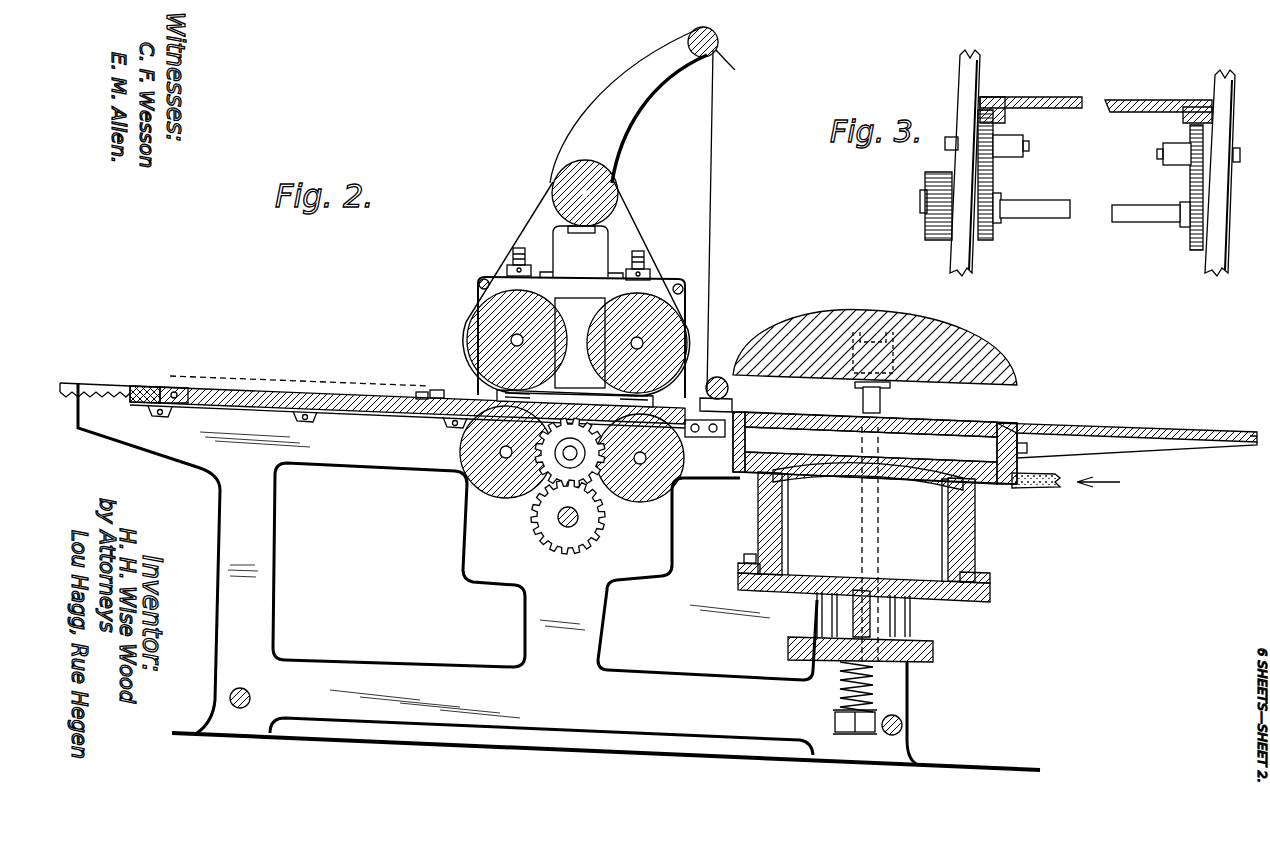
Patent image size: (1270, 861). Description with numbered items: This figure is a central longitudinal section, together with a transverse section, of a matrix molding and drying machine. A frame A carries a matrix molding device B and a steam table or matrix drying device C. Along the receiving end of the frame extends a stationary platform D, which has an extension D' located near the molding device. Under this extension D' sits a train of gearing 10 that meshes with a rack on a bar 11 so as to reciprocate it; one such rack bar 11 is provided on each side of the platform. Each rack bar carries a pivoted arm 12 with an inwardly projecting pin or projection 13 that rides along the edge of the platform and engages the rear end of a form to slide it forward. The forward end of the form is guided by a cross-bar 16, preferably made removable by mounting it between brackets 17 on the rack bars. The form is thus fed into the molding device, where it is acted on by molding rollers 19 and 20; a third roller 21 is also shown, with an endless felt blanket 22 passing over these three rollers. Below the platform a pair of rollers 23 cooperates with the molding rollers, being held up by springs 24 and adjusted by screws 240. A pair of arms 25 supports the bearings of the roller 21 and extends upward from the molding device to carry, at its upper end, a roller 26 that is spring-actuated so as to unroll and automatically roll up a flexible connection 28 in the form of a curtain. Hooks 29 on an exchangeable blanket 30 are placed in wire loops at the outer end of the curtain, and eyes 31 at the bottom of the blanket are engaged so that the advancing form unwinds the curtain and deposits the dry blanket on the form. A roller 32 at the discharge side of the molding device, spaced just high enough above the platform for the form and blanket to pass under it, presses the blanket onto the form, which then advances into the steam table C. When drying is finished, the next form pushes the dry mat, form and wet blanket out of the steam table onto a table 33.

In FIG. 2, the train of gearing 10 is at (562, 458).
In FIG. 3, the train of gearing 10 is at (995, 166).
In FIG. 2, the rack bar 11 is at (68, 385).
In FIG. 3, the rack bar 11 is at (985, 97).
In FIG. 2, the pivoted arm 12 is at (165, 387).
In FIG. 2, the pin or projection 13 is at (149, 385).
In FIG. 2, the cross-bar 16 is at (432, 392).
In FIG. 2, the brackets 17 is at (420, 395).
In FIG. 2, the molding roller 19 is at (490, 322).
In FIG. 2, the molding roller 20 is at (665, 320).
In FIG. 2, the third roller 21 is at (618, 185).
In FIG. 2, the endless felt blanket 22 is at (640, 220).
In FIG. 2, the rollers 23 is at (487, 490).
In FIG. 2, the springs 24 is at (460, 395).
In FIG. 2, the arms 25 is at (602, 97).
In FIG. 2, the roller 26 is at (718, 36).
In FIG. 2, the flexible connection 28 is at (718, 48).
In FIG. 2, the hooks 29 is at (716, 55).
In FIG. 2, the exchangeable blanket 30 is at (716, 170).
In FIG. 2, the eyes 31 is at (705, 409).
In FIG. 2, the roller 32 is at (730, 388).
In FIG. 2, the table 33 is at (1180, 428).
In FIG. 2, the screws 240 is at (518, 258).
In FIG. 2, the frame A is at (262, 549).
In FIG. 3, the frame A is at (958, 262).
In FIG. 2, the matrix molding device B is at (648, 290).
In FIG. 2, the steam table or matrix drying device C is at (967, 445).
In FIG. 2, the stationary platform D is at (423, 402).
In FIG. 3, the stationary platform D is at (1121, 92).
In FIG. 2, the extension D' is at (579, 380).